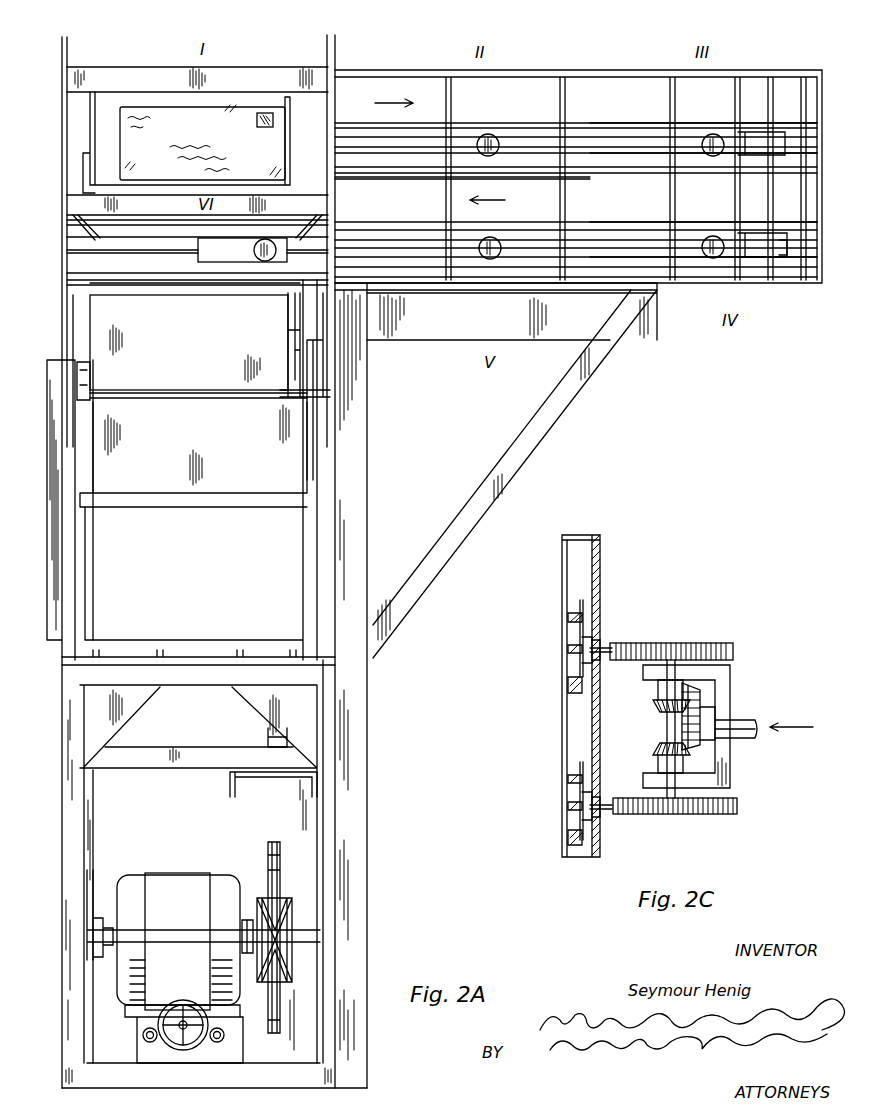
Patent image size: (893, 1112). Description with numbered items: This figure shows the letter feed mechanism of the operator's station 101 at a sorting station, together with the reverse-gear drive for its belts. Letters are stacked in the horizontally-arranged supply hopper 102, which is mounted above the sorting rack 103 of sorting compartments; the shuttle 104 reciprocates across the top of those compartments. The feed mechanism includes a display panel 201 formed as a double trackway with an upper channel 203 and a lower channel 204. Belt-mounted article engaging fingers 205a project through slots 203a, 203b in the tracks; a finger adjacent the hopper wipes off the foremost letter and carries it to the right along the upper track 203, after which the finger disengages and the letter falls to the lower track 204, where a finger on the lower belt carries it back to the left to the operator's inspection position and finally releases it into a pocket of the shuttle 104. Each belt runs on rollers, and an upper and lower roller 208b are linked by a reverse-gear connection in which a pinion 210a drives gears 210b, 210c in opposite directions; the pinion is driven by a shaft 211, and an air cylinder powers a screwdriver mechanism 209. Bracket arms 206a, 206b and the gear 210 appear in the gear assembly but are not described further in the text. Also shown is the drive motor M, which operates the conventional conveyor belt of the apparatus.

In FIG. 2A, the operator's station 101 is at (529, 53).
In FIG. 2A, the supply hopper 102 is at (290, 102).
In FIG. 2A, the sorting rack 103 is at (334, 550).
In FIG. 2A, the shuttle 104 is at (200, 350).
In FIG. 2A, the display panel 201 is at (580, 79).
In FIG. 2A, the upper channel 203 is at (744, 92).
In FIG. 2C, the upper channel 203 is at (569, 695).
In FIG. 2A, the slot 203a is at (594, 145).
In FIG. 2C, the slot 203a is at (599, 634).
In FIG. 2A, the slot 203b is at (594, 246).
In FIG. 2C, the slot 203b is at (598, 807).
In FIG. 2A, the lower channel 204 is at (795, 258).
In FIG. 2C, the lower channel 204 is at (590, 830).
In FIG. 2A, the article engaging fingers 205a is at (508, 243).
In FIG. 2C, the gear bracket upper arm 206a is at (653, 662).
In FIG. 2C, the gear bracket lower arm 206b is at (725, 788).
In FIG. 2C, the roller 208b is at (735, 649).
In FIG. 2C, the screwdriver mechanism 209 is at (798, 725).
In FIG. 2C, the bevel gear 210 is at (703, 701).
In FIG. 2C, the pinion 210a is at (713, 753).
In FIG. 2C, the gear 210b is at (658, 715).
In FIG. 2C, the gear 210c is at (658, 746).
In FIG. 2C, the shaft 211 is at (758, 720).
In FIG. 2A, the drive motor M is at (194, 883).